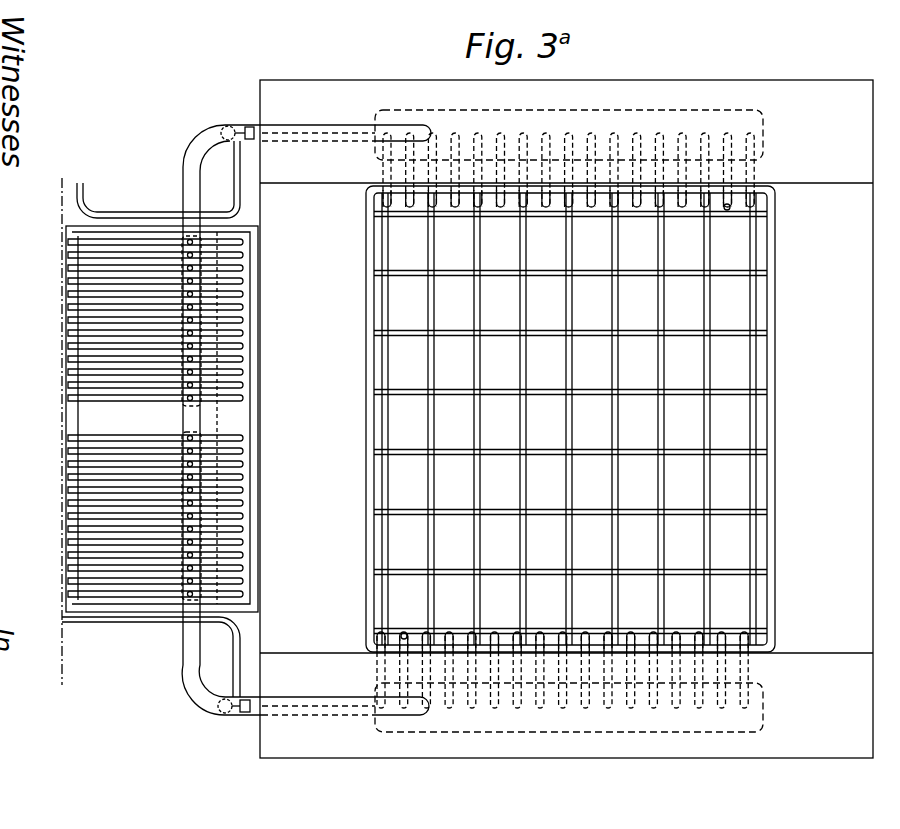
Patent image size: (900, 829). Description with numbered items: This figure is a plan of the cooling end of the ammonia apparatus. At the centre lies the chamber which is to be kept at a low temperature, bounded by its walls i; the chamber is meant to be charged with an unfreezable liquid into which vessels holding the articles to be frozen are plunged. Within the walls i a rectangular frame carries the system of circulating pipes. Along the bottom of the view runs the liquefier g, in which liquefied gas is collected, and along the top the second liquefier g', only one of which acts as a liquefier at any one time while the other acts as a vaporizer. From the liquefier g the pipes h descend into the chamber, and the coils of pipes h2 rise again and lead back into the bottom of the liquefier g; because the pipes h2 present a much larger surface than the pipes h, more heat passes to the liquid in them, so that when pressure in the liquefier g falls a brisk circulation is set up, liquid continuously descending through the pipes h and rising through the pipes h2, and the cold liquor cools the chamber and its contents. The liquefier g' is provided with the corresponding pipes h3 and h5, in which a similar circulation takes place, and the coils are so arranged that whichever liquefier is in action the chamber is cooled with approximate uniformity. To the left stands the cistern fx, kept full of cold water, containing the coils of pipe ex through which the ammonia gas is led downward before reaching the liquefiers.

The walls of the chamber i is at (566, 419).
The liquefier g' is at (531, 135).
The liquefier g is at (518, 707).
The element frame is at (398, 334).
The pipes h is at (495, 636).
The coils of pipes h2 is at (430, 638).
The pipes h3 is at (455, 212).
The pipes h5 is at (570, 423).
The coils of pipe ex is at (150, 419).
The cistern fx is at (162, 420).